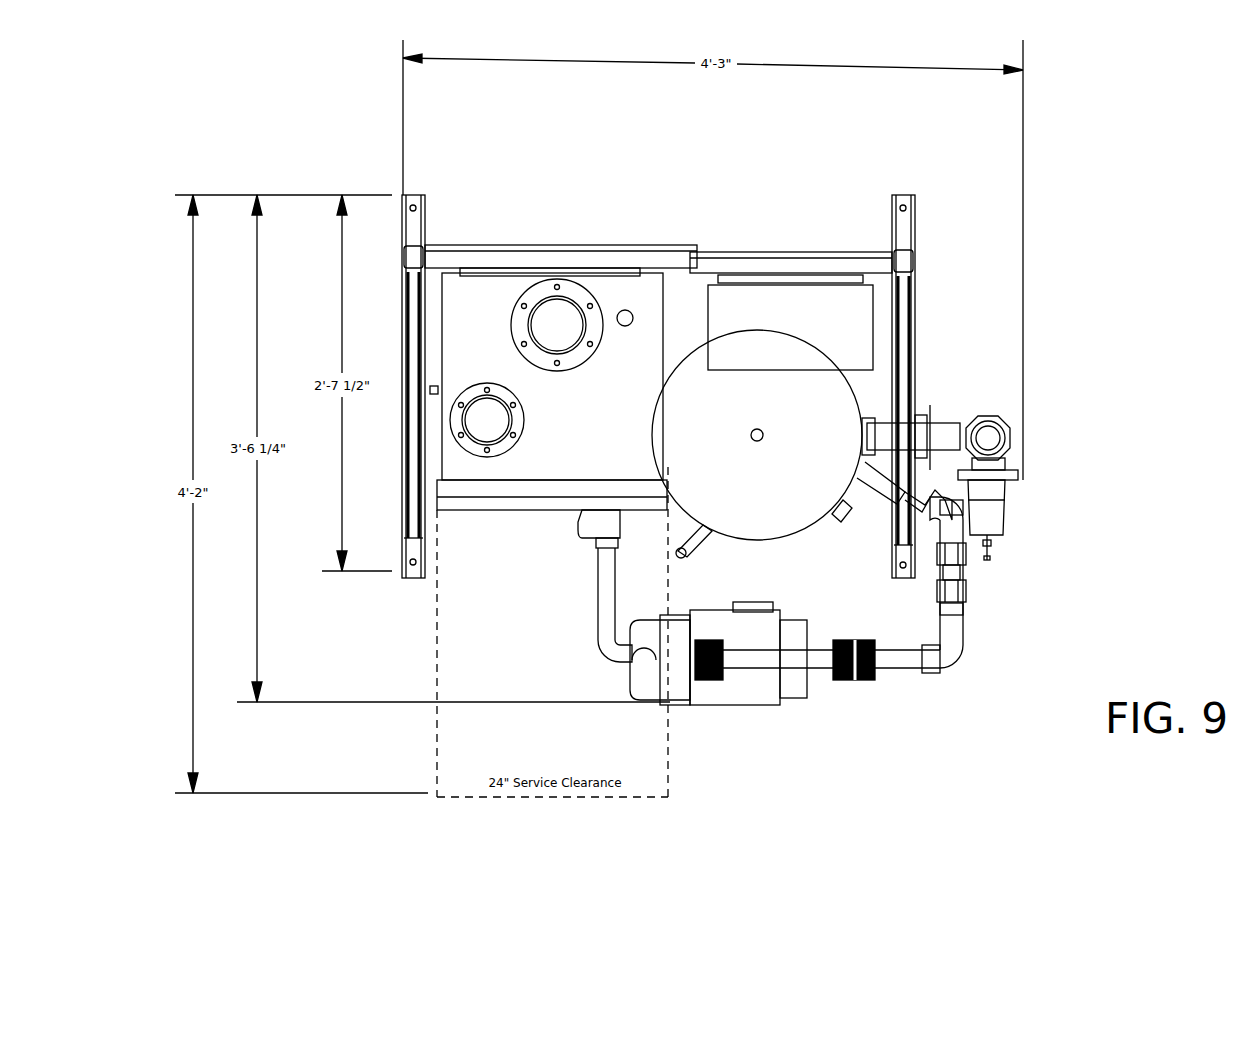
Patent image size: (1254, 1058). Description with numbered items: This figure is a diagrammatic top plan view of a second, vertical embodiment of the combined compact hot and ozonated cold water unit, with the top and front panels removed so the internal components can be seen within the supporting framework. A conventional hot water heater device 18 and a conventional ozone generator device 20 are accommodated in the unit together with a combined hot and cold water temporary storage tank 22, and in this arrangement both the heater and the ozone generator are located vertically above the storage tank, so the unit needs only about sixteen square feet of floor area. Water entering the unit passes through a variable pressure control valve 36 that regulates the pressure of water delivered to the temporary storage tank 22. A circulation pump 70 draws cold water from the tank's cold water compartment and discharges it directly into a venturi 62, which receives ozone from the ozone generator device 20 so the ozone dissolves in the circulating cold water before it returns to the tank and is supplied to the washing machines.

The hot water heater device 18 is at (642, 318).
The ozone generator device 20 is at (777, 346).
The temporary storage tank 22 is at (739, 503).
The variable pressure control valve 36 is at (1008, 500).
The venturi 62 is at (968, 587).
The circulation pump 70 is at (807, 697).